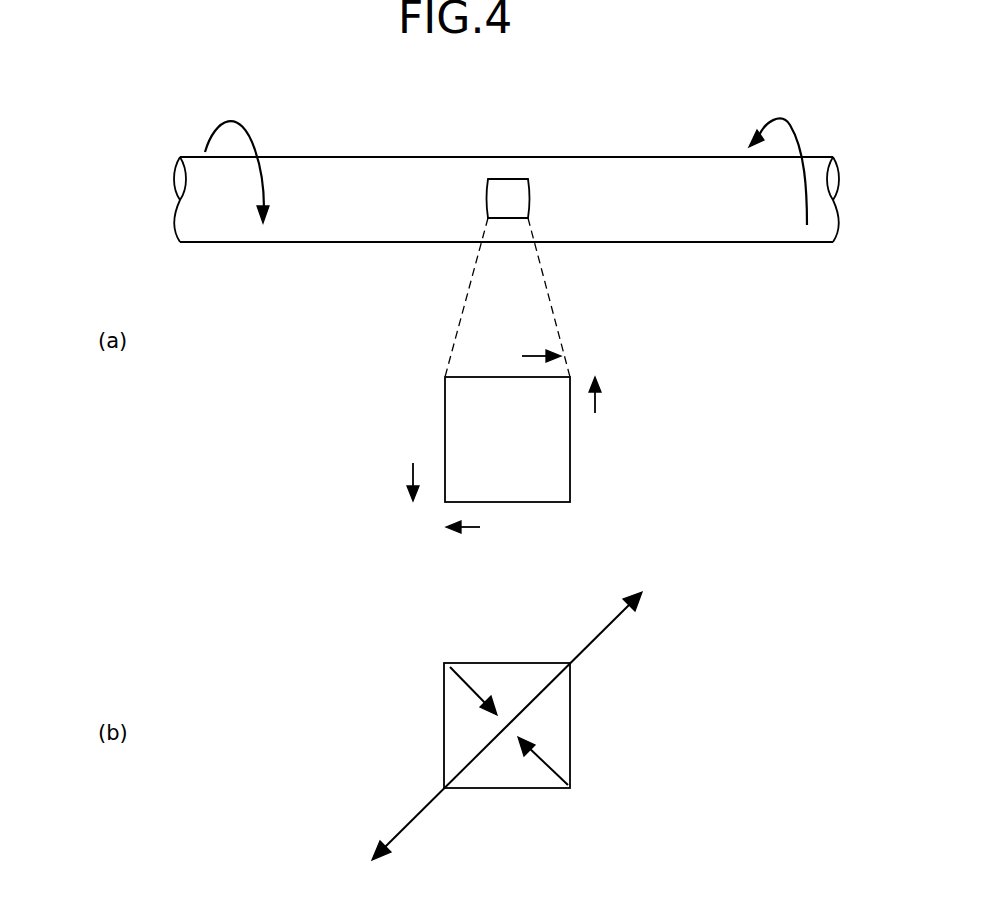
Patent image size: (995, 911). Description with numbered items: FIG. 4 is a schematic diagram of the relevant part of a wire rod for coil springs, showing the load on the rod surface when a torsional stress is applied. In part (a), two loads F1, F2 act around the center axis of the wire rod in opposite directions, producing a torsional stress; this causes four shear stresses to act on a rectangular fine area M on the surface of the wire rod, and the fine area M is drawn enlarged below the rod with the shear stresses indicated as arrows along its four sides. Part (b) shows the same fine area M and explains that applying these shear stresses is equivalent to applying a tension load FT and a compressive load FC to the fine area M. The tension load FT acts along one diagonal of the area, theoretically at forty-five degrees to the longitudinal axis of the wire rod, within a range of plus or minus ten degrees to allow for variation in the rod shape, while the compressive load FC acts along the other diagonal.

The load F1 is at (775, 118).
The load F2 is at (231, 118).
The rectangular fine area M is at (508, 178).
The compressive load FC is at (545, 812).
The tension load FT is at (603, 633).